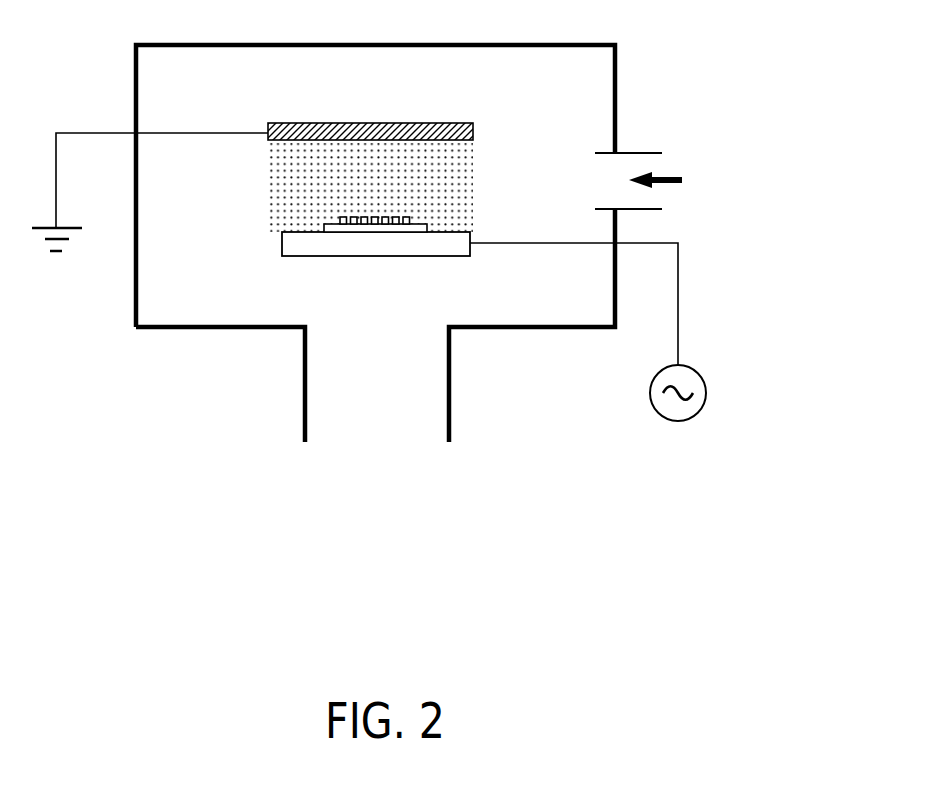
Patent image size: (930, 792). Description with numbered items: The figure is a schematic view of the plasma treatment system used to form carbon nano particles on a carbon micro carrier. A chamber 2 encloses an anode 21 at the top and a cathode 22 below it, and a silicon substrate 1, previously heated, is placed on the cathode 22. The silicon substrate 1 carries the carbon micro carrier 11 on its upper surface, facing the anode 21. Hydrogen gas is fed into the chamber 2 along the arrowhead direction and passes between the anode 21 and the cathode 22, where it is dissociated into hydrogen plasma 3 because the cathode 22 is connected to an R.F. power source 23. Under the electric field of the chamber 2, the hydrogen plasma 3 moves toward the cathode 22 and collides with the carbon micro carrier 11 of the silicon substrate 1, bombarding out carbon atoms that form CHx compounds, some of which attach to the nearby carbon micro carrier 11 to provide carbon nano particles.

The silicon substrate 1 is at (427, 228).
The carbon micro carrier 11 is at (409, 220).
The chamber 2 is at (615, 75).
The anode 21 is at (473, 128).
The cathode 22 is at (453, 252).
The hydrogen plasma 3 is at (462, 162).
The R.F. power source 23 is at (706, 393).